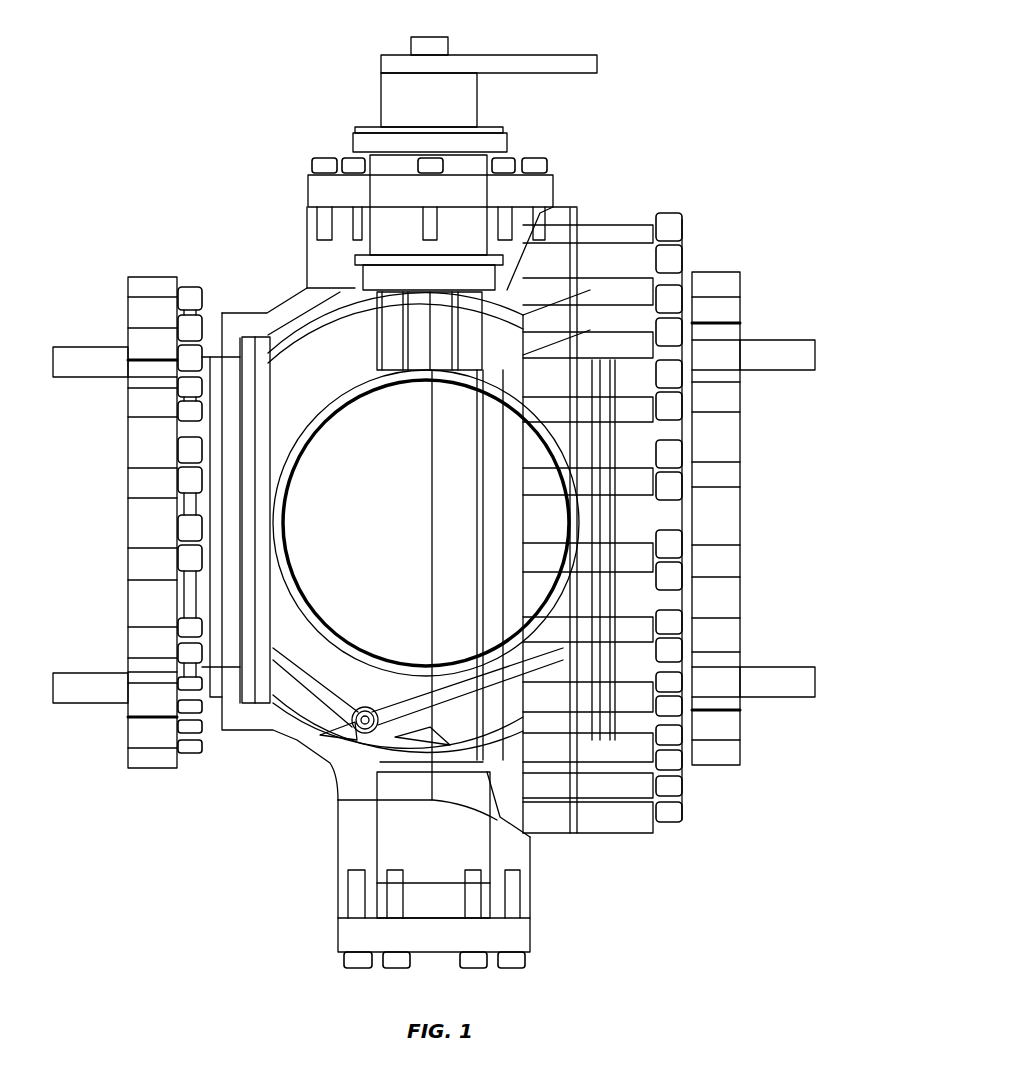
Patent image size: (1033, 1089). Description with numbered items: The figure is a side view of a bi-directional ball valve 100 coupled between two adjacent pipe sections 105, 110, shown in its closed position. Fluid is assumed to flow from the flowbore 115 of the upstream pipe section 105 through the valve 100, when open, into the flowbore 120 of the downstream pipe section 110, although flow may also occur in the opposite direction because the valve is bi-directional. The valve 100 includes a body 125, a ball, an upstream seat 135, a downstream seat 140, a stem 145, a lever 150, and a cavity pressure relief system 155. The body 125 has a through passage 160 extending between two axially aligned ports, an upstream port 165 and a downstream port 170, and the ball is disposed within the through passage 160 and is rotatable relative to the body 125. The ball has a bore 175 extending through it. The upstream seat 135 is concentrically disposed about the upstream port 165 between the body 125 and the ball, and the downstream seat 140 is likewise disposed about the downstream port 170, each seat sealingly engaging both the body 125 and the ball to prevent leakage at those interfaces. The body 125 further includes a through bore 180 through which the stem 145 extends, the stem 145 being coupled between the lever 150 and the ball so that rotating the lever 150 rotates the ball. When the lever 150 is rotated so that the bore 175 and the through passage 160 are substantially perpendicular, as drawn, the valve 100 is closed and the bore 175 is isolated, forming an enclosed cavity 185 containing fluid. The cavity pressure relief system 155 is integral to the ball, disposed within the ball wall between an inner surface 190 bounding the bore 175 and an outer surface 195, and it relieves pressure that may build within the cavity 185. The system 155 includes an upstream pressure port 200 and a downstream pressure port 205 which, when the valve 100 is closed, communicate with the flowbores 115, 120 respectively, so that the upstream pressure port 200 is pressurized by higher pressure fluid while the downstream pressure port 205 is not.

The ball valve 100 is at (690, 88).
The pipe section 105 is at (107, 695).
The pipe section 110 is at (798, 343).
The flowbore 115 is at (95, 535).
The flowbore 120 is at (805, 535).
The body 125 is at (238, 323).
The upstream seat 135 is at (248, 585).
The downstream seat 140 is at (615, 608).
The stem 145 is at (446, 108).
The lever 150 is at (555, 55).
The cavity pressure relief system 155 is at (368, 705).
The through passage 160 is at (295, 323).
The upstream port 165 is at (243, 492).
The downstream port 170 is at (618, 443).
The bore 175 is at (368, 502).
The through bore 180 is at (353, 268).
The enclosed cavity 185 is at (420, 502).
The inner surface 190 is at (340, 631).
The outer surface 195 is at (303, 733).
The upstream pressure port 200 is at (275, 655).
The downstream pressure port 205 is at (512, 667).